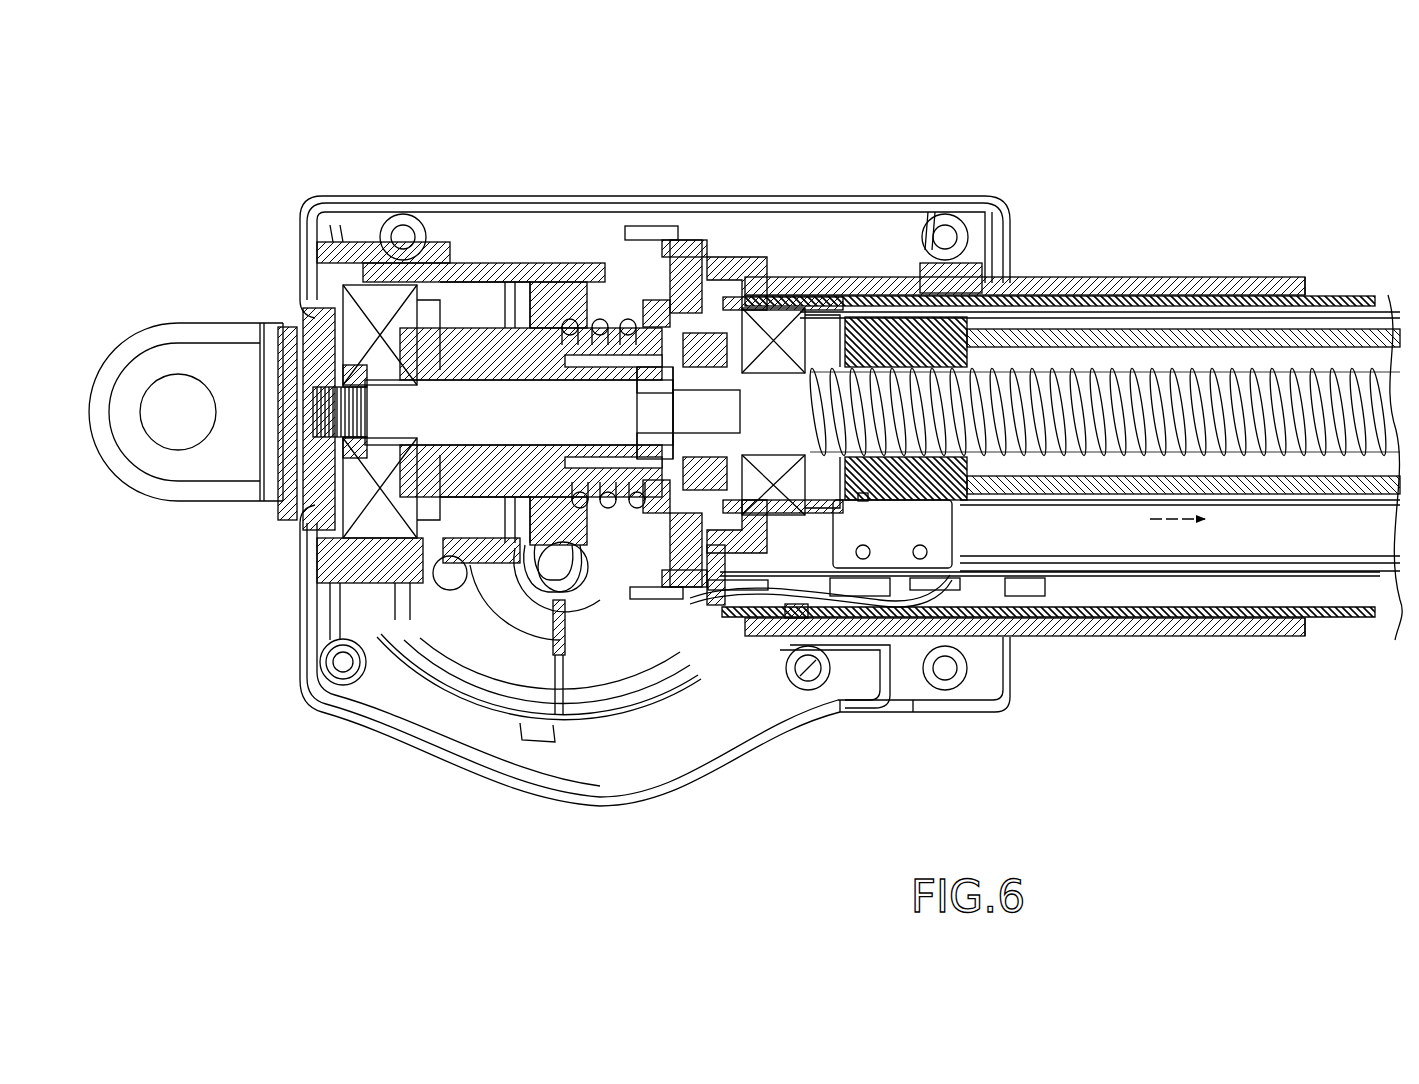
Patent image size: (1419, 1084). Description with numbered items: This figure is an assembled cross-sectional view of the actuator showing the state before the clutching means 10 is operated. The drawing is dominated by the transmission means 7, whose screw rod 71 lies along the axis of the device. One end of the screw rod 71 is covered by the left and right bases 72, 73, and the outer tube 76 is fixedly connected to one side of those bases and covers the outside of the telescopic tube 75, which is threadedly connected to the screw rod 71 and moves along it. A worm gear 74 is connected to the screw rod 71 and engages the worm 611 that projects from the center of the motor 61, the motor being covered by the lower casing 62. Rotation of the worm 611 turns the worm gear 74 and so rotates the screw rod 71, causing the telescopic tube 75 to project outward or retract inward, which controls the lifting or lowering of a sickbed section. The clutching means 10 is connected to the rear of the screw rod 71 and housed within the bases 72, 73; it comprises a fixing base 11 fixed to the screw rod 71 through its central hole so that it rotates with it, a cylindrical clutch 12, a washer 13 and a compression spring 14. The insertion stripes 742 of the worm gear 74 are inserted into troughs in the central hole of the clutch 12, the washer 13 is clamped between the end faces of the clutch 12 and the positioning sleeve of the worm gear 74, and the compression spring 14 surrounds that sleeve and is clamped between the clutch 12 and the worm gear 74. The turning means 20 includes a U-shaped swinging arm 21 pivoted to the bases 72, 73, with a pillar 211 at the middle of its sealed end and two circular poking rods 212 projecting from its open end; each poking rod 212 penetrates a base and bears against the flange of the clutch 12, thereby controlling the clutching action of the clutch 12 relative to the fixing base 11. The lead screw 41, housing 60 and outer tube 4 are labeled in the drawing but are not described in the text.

The outer tube 4 is at (1195, 280).
The transmission means 7 is at (197, 320).
The clutching means 10 is at (537, 864).
The fixing base 11 is at (722, 548).
The clutch 12 is at (652, 605).
The washer 13 is at (790, 300).
The compression spring 14 is at (540, 565).
The turning means 20 is at (653, 225).
The swinging arm 21 is at (612, 340).
The lead screw 41 is at (1118, 290).
The housing 60 is at (999, 706).
The motor 61 is at (492, 652).
The lower casing 62 is at (940, 708).
The screw rod 71 is at (466, 424).
The left base 72 is at (368, 580).
The right base 73 is at (518, 310).
The worm gear 74 is at (460, 310).
The telescopic tube 75 is at (1330, 333).
The outer tube 76 is at (1330, 632).
The pillar 211 is at (635, 407).
The poking rods 212 is at (700, 240).
The worm 611 is at (607, 605).
The insertion stripes 742 is at (574, 320).